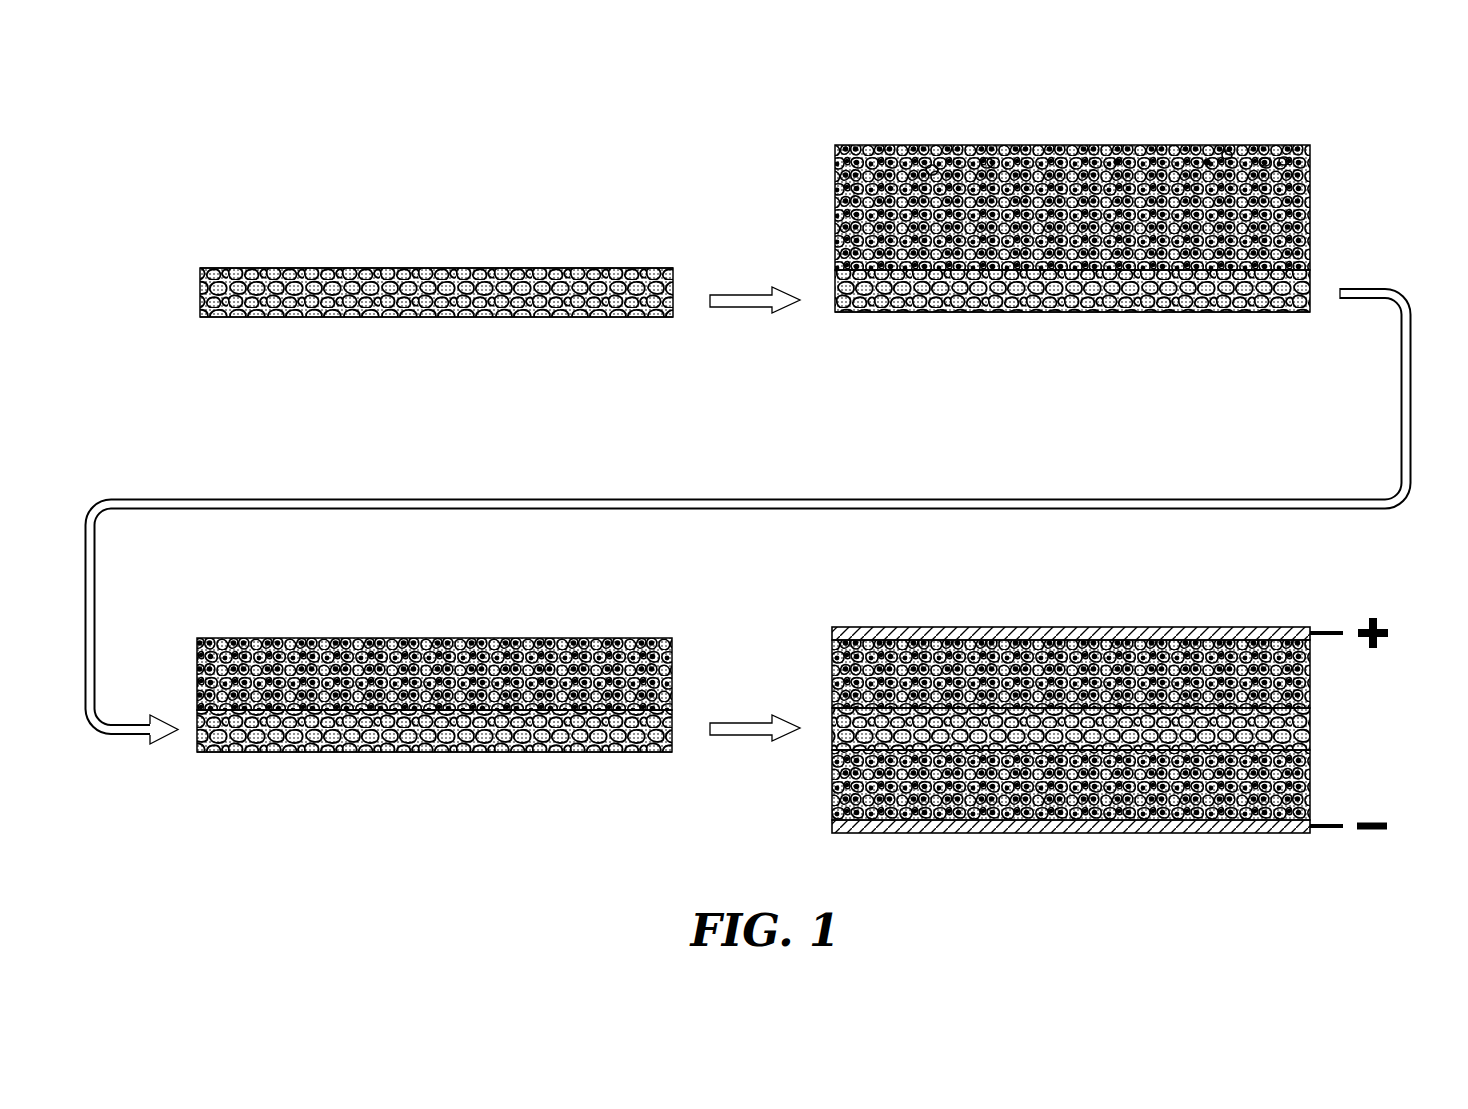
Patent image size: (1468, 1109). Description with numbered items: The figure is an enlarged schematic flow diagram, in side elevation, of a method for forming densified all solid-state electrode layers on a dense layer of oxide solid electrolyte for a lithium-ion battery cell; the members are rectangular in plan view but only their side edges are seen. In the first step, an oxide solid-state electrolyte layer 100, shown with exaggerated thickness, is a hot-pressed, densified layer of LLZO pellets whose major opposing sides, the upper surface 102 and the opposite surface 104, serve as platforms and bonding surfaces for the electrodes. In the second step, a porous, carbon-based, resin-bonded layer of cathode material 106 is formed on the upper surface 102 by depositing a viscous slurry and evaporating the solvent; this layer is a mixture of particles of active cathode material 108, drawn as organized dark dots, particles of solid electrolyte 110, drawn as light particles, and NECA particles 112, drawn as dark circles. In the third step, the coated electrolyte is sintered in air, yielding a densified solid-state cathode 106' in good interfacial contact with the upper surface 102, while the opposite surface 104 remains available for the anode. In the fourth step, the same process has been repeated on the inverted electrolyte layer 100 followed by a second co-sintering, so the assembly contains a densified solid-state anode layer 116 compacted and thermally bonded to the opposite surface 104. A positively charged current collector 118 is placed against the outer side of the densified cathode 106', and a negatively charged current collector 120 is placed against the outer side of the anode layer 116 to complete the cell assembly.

The oxide solid-state electrolyte layer 100 is at (388, 228).
The upper surface 102 is at (552, 268).
The opposite surface 104 is at (553, 317).
The porous layer of cathode material 106 is at (1145, 192).
The densified solid-state cathode 106' is at (826, 634).
The particles of active cathode material 108 is at (987, 158).
The particles of solid electrolyte 110 is at (1207, 158).
The NECA particles 112 is at (1283, 157).
The densified solid-state anode layer 116 is at (1310, 786).
The current collector 118 is at (1160, 627).
The current collector 120 is at (1160, 833).